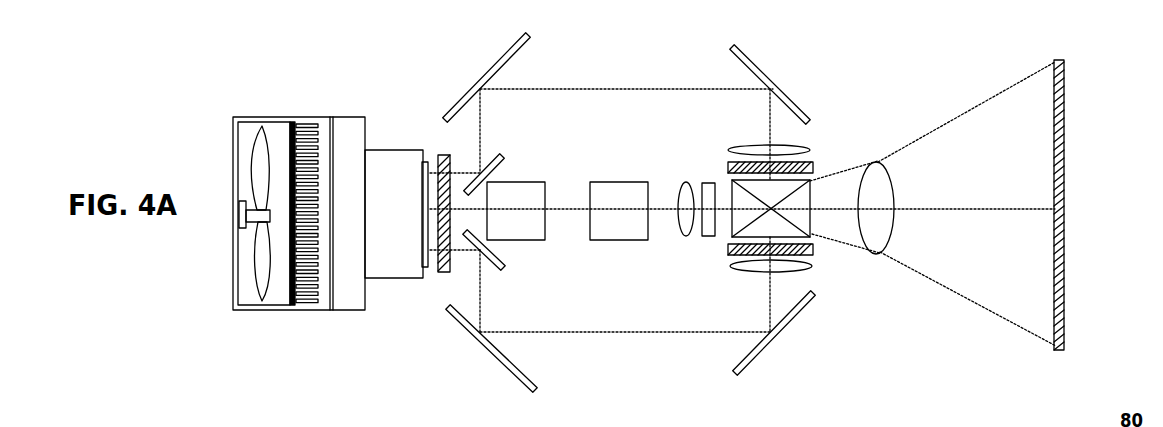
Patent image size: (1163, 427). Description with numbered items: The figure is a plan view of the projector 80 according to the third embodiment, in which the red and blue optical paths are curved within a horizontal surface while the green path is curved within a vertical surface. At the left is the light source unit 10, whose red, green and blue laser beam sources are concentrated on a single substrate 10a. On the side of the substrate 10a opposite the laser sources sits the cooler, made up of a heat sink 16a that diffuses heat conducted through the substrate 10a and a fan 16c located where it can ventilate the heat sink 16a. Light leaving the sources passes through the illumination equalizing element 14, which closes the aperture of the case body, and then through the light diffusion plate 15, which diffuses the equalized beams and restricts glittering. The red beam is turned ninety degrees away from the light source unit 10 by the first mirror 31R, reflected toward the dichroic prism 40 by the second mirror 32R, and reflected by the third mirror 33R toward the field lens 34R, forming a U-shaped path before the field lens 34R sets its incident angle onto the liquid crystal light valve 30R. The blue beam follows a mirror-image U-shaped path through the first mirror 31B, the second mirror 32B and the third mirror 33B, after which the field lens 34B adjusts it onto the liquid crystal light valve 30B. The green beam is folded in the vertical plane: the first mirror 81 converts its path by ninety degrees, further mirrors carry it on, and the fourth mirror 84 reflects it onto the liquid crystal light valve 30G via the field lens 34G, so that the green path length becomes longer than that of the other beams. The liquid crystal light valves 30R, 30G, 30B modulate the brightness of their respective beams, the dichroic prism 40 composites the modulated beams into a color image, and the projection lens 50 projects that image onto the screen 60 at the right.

The light source unit 10 is at (394, 283).
The substrate 10a is at (360, 311).
The illumination equalizing element 14 is at (425, 268).
The light diffusion plate 15 is at (443, 273).
The heat sink 16a is at (320, 311).
The fan 16c is at (260, 311).
The liquid crystal light valve 30R is at (728, 168).
The liquid crystal light valve 30G is at (709, 237).
The liquid crystal light valve 30B is at (815, 250).
The first mirror 31R is at (503, 160).
The first mirror 31B is at (503, 265).
The second mirror 32R is at (473, 90).
The second mirror 32B is at (490, 350).
The third mirror 33R is at (776, 90).
The third mirror 33B is at (772, 345).
The field lens 34R is at (752, 146).
The field lens 34G is at (684, 237).
The field lens 34B is at (752, 272).
The dichroic prism 40 is at (813, 195).
The projection lens 50 is at (876, 163).
The screen 60 is at (1065, 283).
The projector 80 is at (1086, 72).
The first mirror 81 is at (530, 241).
The fourth mirror 84 is at (621, 241).